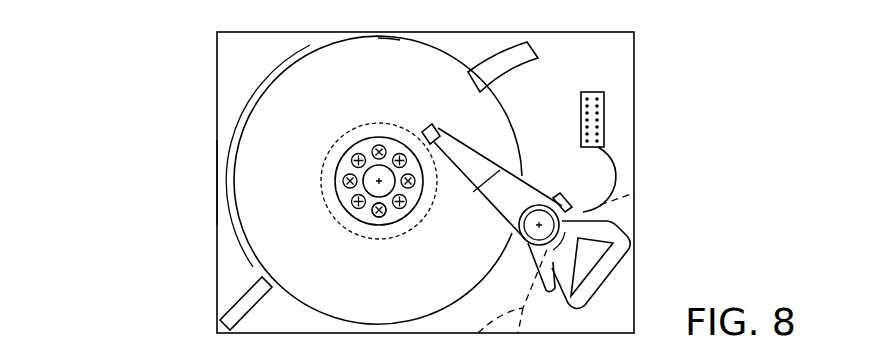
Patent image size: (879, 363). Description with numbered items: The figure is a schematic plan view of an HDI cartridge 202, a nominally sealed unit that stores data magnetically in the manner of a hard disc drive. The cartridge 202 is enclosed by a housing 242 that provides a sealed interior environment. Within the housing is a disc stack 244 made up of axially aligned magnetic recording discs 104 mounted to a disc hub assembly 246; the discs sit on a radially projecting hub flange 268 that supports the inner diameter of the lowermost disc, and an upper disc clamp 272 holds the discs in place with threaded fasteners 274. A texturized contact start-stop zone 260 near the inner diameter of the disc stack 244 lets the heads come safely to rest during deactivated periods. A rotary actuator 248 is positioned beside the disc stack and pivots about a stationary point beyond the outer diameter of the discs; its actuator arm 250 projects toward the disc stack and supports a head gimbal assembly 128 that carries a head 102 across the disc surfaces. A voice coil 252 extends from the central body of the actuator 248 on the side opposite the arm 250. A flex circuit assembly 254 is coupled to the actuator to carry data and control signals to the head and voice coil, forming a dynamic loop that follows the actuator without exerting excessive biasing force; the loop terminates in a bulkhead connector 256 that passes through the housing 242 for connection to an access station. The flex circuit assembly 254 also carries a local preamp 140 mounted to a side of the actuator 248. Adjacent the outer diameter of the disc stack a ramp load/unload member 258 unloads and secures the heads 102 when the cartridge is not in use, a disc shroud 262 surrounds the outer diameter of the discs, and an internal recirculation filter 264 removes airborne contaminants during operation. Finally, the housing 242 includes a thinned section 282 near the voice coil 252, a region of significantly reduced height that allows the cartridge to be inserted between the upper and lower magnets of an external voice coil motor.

The HDI cartridge 202 is at (148, 35).
The housing 242 is at (217, 92).
The disc shroud 262 is at (217, 183).
The disc stack 244 is at (345, 75).
The magnetic recording disc 104 is at (384, 55).
The internal recirculation filter 264 is at (238, 298).
The ramp load/unload member 258 is at (488, 62).
The hub flange 268 is at (372, 165).
The disc hub assembly 246 is at (334, 152).
The contact start-stop zone 260 is at (331, 210).
The threaded fastener 274 is at (349, 178).
The upper disc clamp 272 is at (392, 215).
The head 102 is at (440, 124).
The head gimbal assembly 128 is at (475, 160).
The actuator arm 250 is at (523, 176).
The preamplifier/driver circuit 140 is at (561, 205).
The rotary actuator 248 is at (494, 224).
The voice coil 252 is at (595, 283).
The bulkhead connector 256 is at (605, 118).
The flex circuit assembly 254 is at (634, 170).
The thinned section 282 is at (477, 340).